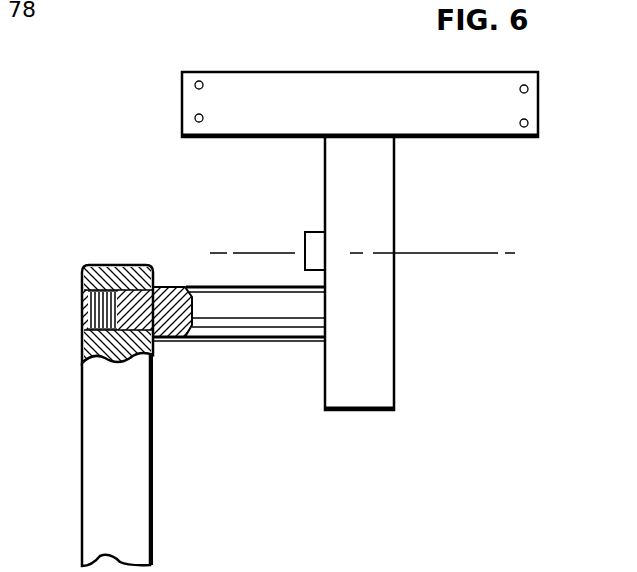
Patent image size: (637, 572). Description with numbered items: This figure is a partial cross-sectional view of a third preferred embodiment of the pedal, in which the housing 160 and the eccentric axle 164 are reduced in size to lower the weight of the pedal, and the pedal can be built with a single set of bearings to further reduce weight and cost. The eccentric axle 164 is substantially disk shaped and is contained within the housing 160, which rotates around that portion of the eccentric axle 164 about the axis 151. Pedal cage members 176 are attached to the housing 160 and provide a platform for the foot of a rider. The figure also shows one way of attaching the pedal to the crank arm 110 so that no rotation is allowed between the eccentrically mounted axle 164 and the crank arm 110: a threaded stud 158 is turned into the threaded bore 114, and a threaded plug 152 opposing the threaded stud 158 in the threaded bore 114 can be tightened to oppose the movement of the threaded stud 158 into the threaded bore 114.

The pedal cage members 176 is at (403, 76).
The housing 160 is at (394, 370).
The axis 151 is at (440, 253).
The eccentric axle 164 is at (225, 340).
The threaded stud 158 is at (173, 294).
The threaded bore 114 is at (130, 292).
The threaded plug 152 is at (84, 313).
The crank arm 110 is at (84, 452).